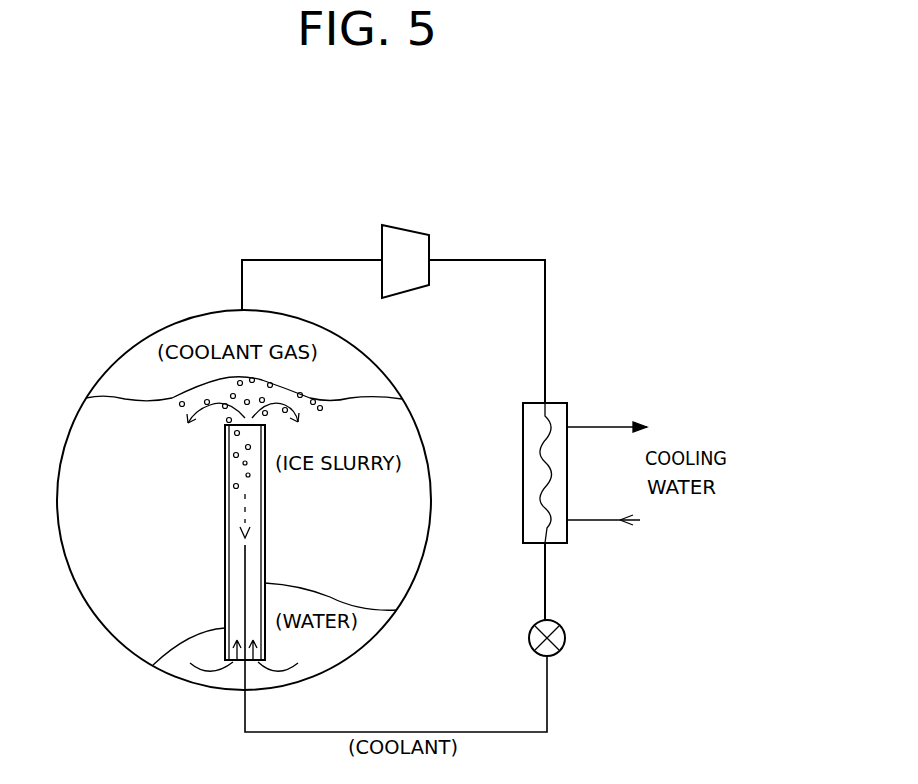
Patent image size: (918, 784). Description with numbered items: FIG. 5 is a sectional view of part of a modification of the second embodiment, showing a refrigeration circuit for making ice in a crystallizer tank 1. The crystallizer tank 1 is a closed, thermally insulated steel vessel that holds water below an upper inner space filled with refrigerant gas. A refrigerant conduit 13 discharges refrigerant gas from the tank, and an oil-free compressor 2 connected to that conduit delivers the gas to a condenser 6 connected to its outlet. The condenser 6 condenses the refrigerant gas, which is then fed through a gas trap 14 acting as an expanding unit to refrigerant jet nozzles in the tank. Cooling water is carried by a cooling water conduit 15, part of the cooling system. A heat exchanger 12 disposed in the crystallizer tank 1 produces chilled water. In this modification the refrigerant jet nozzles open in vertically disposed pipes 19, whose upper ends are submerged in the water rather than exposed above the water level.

The crystallizer tank 1 is at (105, 373).
The compressor 2 is at (401, 227).
The condenser 6 is at (523, 432).
The heat exchanger 12 is at (397, 610).
The refrigerant conduit 13 is at (250, 707).
The gas trap 14 is at (565, 637).
The cooling water conduit 15 is at (606, 425).
The pipes 19 is at (158, 660).